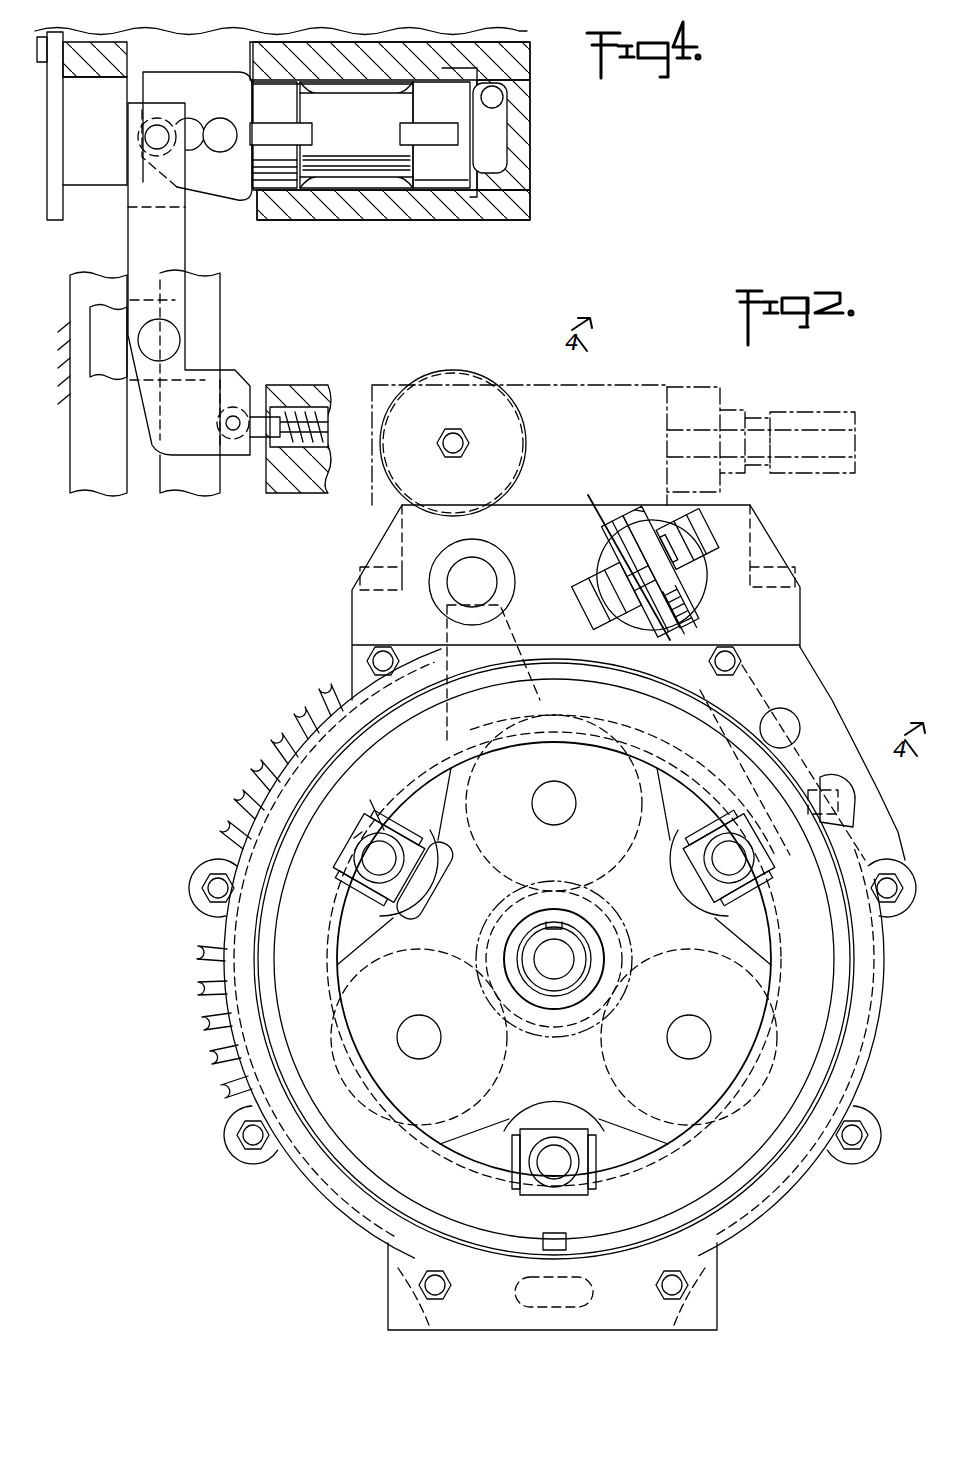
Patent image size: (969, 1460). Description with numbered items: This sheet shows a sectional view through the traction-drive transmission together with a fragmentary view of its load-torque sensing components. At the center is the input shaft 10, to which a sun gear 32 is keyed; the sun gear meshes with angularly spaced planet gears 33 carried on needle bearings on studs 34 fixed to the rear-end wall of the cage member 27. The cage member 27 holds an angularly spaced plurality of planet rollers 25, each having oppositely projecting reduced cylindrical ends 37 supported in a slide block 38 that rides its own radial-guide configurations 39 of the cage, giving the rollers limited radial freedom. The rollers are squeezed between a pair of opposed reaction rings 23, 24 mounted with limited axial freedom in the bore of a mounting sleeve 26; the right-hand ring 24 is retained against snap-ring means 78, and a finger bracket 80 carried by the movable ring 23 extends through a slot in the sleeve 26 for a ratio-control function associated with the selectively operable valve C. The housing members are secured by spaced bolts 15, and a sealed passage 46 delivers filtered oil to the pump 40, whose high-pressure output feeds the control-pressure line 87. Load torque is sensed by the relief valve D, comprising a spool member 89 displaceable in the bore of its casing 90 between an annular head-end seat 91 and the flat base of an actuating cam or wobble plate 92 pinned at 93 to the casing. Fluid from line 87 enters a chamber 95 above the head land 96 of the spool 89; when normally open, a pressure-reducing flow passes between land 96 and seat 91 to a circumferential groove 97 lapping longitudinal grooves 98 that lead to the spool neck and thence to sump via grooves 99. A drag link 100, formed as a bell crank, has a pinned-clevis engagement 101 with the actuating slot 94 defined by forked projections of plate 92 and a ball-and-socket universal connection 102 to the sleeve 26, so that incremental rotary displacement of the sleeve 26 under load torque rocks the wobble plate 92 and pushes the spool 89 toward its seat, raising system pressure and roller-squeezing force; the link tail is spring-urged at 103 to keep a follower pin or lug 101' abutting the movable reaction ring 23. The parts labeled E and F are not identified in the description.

In FIG. 2, the input shaft 10 is at (561, 971).
In FIG. 2, the bolts 15 is at (398, 650).
In FIG. 4, the reaction ring 23 is at (180, 487).
In FIG. 4, the reaction ring 24 is at (92, 487).
In FIG. 2, the planet rollers 25 is at (353, 865).
In FIG. 4, the mounting sleeve 26 is at (104, 376).
In FIG. 2, the mounting sleeve 26 is at (414, 710).
In FIG. 2, the cage member 27 is at (694, 767).
In FIG. 2, the sun gear 32 is at (582, 888).
In FIG. 2, the planet gears 33 is at (560, 870).
In FIG. 2, the studs 34 is at (561, 815).
In FIG. 2, the reduced cylindrical ends 37 is at (383, 812).
In FIG. 2, the slide block 38 is at (375, 808).
In FIG. 2, the radial-guide configurations 39 is at (408, 872).
In FIG. 2, the pump 40 is at (600, 498).
In FIG. 2, the passage 46 is at (582, 1275).
In FIG. 4, the snap-ring means 78 is at (60, 415).
In FIG. 2, the finger bracket 80 is at (535, 598).
In FIG. 4, the control-pressure line 87 is at (500, 98).
In FIG. 4, the spool member 89 is at (364, 140).
In FIG. 4, the casing 90 is at (370, 212).
In FIG. 4, the annular head-end seat 91 is at (466, 180).
In FIG. 4, the actuating cam or wobble plate 92 is at (250, 198).
In FIG. 2, the actuating cam or wobble plate 92 is at (604, 528).
In FIG. 4, the pin 93 is at (221, 144).
In FIG. 2, the pin 93 is at (700, 540).
In FIG. 4, the actuating slot 94 is at (200, 124).
In FIG. 4, the chamber 95 is at (506, 142).
In FIG. 4, the head land 96 is at (425, 82).
In FIG. 4, the circumferential groove 97 is at (458, 198).
In FIG. 4, the longitudinal grooves 98 is at (434, 126).
In FIG. 4, the grooves 99 is at (266, 126).
In FIG. 4, the drag link 100 is at (128, 237).
In FIG. 2, the drag link 100 is at (714, 604).
In FIG. 4, the pinned-clevis engagement 101 is at (126, 141).
In FIG. 2, the pinned-clevis engagement 101 is at (637, 580).
In FIG. 4, the follower pin or lug 101' is at (243, 460).
In FIG. 4, the ball-and-socket universal connection 102 is at (170, 340).
In FIG. 2, the ball-and-socket universal connection 102 is at (800, 722).
In FIG. 4, the spring 103 is at (302, 390).
In FIG. 2, the selectively operable valve C is at (513, 563).
In FIG. 4, the relief valve D is at (390, 63).
In FIG. 2, the relief valve D is at (658, 517).
In FIG. 2, the roller E is at (486, 368).
In FIG. 2, the shaft F is at (826, 405).